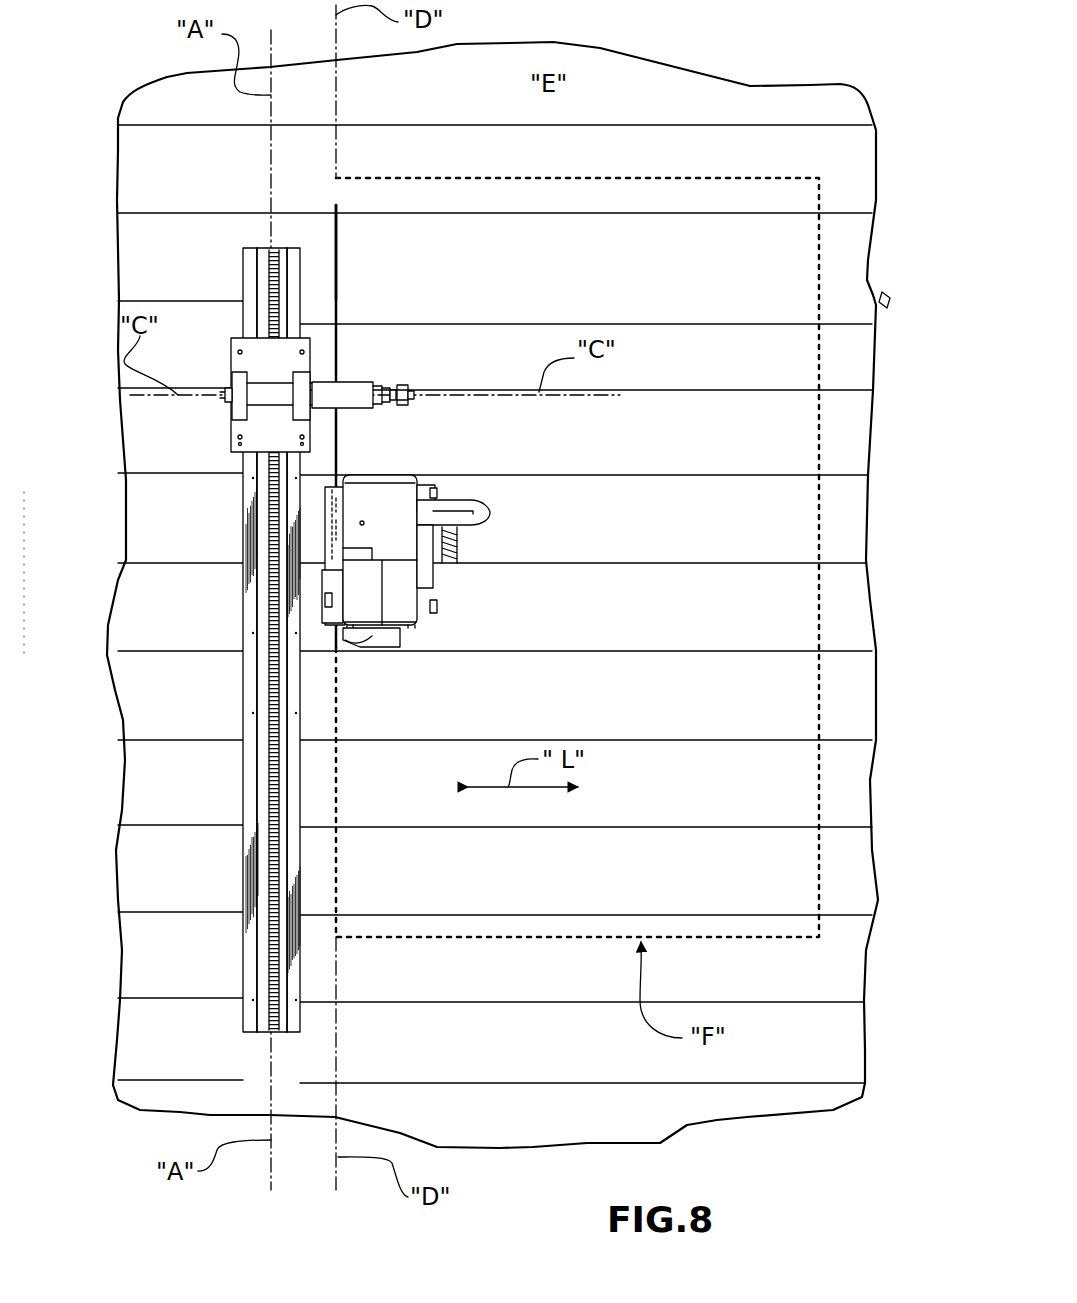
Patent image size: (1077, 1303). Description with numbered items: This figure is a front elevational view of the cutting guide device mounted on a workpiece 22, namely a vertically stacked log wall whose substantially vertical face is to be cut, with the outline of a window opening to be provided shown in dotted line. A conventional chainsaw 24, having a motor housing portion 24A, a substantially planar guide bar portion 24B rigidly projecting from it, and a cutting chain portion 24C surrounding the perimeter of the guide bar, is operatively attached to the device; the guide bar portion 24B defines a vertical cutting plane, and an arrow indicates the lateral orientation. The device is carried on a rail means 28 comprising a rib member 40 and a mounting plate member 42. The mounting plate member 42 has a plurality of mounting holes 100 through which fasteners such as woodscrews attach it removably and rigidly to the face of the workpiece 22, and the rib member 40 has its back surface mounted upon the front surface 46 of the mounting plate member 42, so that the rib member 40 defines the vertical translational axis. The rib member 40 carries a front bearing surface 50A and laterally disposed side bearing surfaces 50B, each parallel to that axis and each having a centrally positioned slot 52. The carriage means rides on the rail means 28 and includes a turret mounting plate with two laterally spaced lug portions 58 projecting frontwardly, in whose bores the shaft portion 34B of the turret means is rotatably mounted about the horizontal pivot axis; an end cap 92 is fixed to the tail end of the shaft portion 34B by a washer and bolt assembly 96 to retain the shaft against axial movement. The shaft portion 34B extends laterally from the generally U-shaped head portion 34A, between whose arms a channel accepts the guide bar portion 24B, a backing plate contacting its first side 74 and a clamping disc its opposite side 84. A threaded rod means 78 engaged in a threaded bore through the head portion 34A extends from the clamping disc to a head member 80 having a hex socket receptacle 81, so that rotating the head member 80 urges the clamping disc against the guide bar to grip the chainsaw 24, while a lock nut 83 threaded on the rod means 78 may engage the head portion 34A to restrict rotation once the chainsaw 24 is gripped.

The workpiece 22 is at (770, 64).
The chainsaw 24 is at (450, 561).
The motor housing portion 24A is at (400, 563).
The guide bar portion 24B is at (339, 346).
The cutting chain portion 24C is at (339, 270).
The rail means 28 is at (234, 663).
The head portion 34A is at (357, 405).
The shaft portion 34B is at (215, 344).
The rib member 40 is at (251, 664).
The mounting plate member 42 is at (252, 1015).
The front surface 46 is at (238, 802).
The front bearing surface 50A is at (268, 668).
The side bearing surfaces 50B is at (296, 702).
The slot 52 is at (262, 873).
The lug portions 58 is at (215, 355).
The first side of guide bar portion 74 is at (331, 231).
The threaded rod means 78 is at (393, 395).
The head member 80 is at (408, 390).
The hex socket receptacle 81 is at (420, 410).
The lock nut 83 is at (383, 407).
The opposite side of guide bar portion 84 is at (345, 242).
The end cap 92 is at (228, 405).
The bolt assembly 96 is at (225, 388).
The mounting holes 100 is at (248, 475).